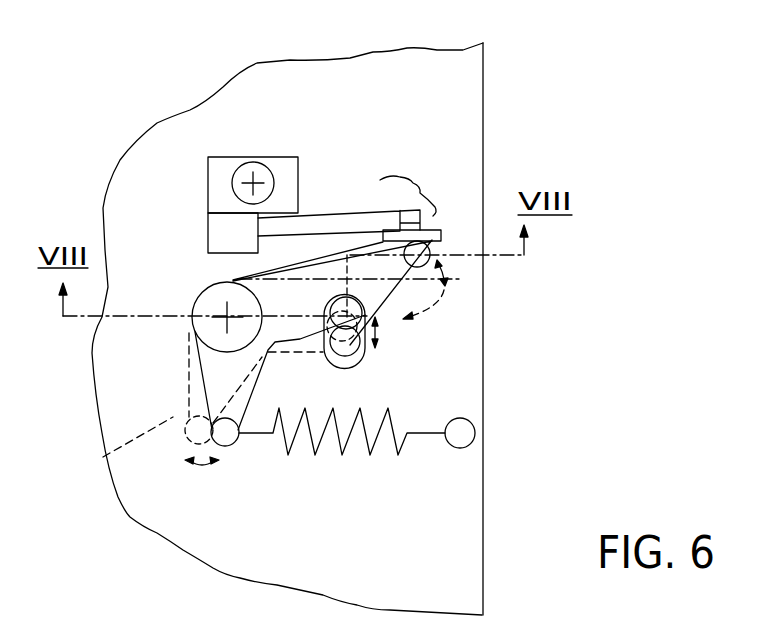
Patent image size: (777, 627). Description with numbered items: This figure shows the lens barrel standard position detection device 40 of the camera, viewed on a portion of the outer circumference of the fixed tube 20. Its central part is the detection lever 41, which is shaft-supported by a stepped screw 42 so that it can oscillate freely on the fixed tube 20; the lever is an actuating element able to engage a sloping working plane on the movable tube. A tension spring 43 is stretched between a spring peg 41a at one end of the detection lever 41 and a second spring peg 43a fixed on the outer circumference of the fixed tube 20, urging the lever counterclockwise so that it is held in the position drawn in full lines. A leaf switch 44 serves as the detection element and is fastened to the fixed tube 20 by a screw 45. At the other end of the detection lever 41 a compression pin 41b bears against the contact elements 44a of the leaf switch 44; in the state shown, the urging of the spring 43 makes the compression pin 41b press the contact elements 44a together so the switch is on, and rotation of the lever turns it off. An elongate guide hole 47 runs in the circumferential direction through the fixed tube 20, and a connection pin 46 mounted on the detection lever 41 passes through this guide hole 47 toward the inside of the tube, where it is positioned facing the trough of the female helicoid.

The fixed tube 20 is at (462, 590).
The lens barrel standard position detection device 40 is at (470, 97).
The detection lever 41 is at (212, 380).
The spring peg 41a is at (231, 446).
The compression pin 41b is at (430, 252).
The stepped screw 42 is at (205, 300).
The tension spring 43 is at (385, 453).
The spring peg 43a is at (463, 433).
The leaf switch 44 is at (282, 157).
The contact elements 44a is at (423, 177).
The screw 45 is at (245, 172).
The connection pin 46 is at (367, 312).
The guide hole 47 is at (364, 357).